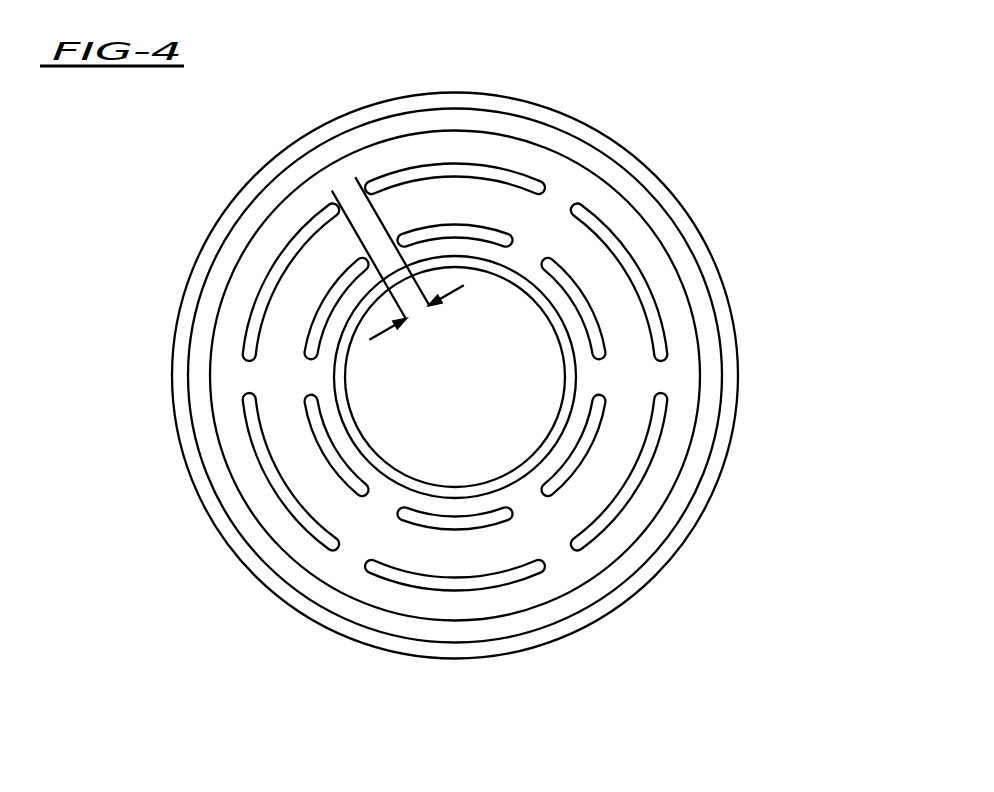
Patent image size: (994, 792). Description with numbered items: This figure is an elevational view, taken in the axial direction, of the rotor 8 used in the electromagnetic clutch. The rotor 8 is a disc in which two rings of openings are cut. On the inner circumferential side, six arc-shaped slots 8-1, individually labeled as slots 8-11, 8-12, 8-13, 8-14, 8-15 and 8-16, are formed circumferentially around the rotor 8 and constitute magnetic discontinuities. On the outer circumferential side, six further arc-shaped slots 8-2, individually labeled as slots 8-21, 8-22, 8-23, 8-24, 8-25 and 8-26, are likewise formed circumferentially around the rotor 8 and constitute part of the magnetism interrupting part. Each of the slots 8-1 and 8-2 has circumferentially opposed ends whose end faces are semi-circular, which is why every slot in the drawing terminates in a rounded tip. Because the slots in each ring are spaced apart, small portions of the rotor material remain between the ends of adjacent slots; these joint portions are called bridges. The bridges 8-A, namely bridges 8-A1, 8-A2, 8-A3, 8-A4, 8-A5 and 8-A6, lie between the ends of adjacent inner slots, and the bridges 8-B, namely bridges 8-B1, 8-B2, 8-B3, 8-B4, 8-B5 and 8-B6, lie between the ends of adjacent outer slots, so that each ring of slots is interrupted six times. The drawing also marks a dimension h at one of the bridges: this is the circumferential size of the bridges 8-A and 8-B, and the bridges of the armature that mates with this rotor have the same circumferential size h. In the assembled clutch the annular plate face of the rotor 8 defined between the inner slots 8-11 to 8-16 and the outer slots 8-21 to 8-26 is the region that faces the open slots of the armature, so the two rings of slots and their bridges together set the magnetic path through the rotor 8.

The rotor 8 is at (600, 152).
The arc-shaped slots 8-1 is at (462, 394).
The arc-shaped slot 8-11 is at (503, 233).
The arc-shaped slot 8-12 is at (325, 303).
The arc-shaped slot 8-13 is at (313, 422).
The arc-shaped slot 8-14 is at (495, 518).
The arc-shaped slot 8-15 is at (593, 427).
The arc-shaped slot 8-16 is at (593, 328).
The arc-shaped slots 8-2 is at (461, 398).
The arc-shaped slot 8-21 is at (480, 162).
The arc-shaped slot 8-22 is at (293, 237).
The arc-shaped slot 8-23 is at (277, 488).
The arc-shaped slot 8-24 is at (467, 585).
The arc-shaped slot 8-25 is at (643, 468).
The arc-shaped slot 8-26 is at (642, 283).
The bridges 8-A is at (462, 366).
The bridge 8-A1 is at (372, 228).
The bridge 8-A2 is at (305, 373).
The bridge 8-A3 is at (383, 503).
The bridge 8-A4 is at (532, 503).
The bridge 8-A5 is at (605, 375).
The bridge 8-A6 is at (533, 252).
The bridges 8-B is at (460, 377).
The bridge 8-B1 is at (347, 188).
The bridge 8-B2 is at (245, 377).
The bridge 8-B3 is at (357, 558).
The bridge 8-B4 is at (558, 558).
The bridge 8-B5 is at (667, 377).
The bridge 8-B6 is at (560, 198).
The circumferential size h is at (398, 258).